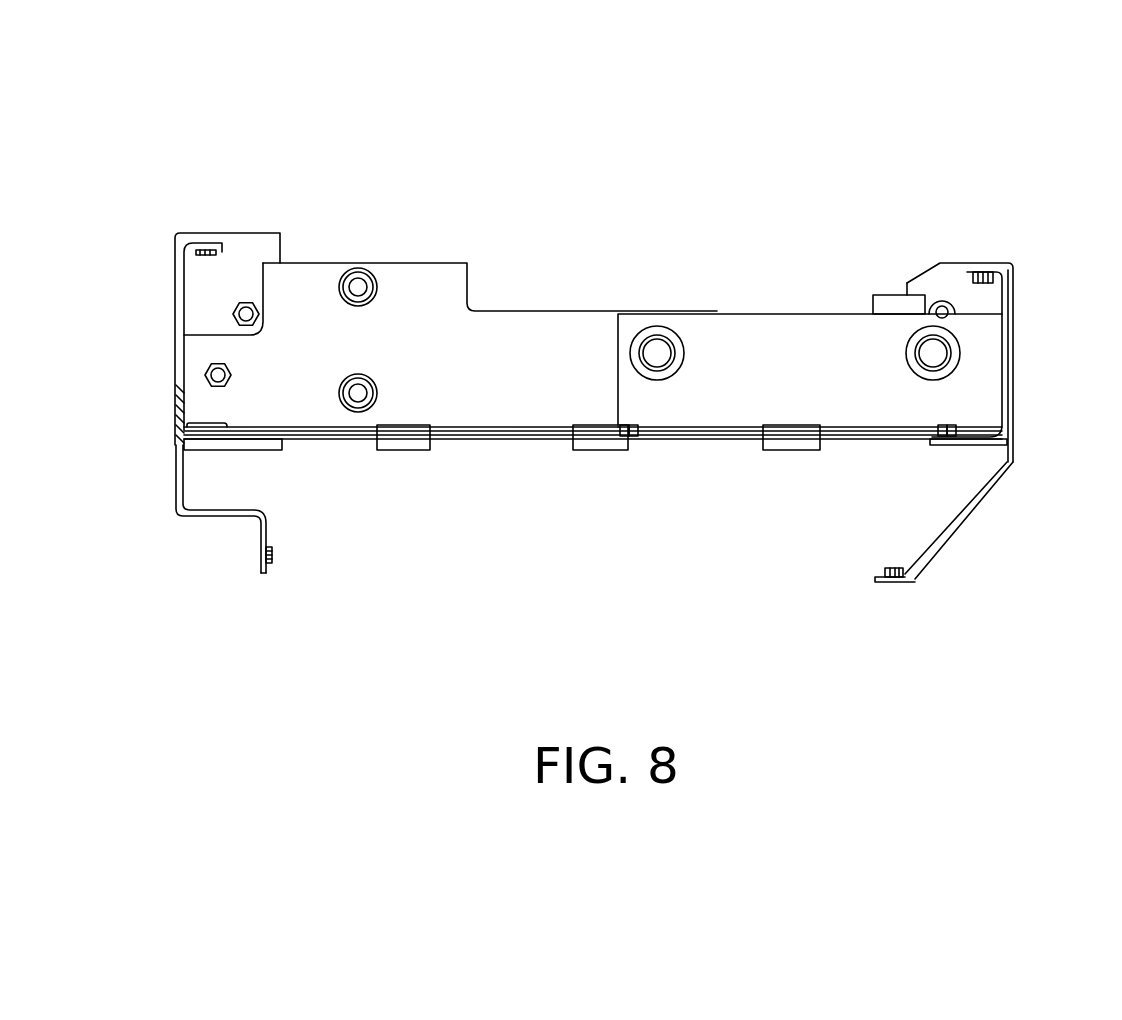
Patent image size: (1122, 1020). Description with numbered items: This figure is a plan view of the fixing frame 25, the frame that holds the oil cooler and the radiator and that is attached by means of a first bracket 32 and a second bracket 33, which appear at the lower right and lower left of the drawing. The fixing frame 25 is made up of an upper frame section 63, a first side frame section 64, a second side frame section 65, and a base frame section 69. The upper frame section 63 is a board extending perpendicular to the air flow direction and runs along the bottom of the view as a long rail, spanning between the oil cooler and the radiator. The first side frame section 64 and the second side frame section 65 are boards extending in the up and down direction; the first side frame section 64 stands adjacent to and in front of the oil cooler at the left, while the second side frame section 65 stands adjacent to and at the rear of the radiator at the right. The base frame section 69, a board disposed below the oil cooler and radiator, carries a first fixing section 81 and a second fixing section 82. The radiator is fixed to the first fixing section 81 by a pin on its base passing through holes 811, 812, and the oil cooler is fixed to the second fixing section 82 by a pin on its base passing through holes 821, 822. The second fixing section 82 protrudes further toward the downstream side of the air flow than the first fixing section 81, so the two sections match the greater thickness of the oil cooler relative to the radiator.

The fixing frame 25 is at (693, 212).
The first bracket 32 is at (957, 527).
The second bracket 33 is at (200, 518).
The upper frame section 63 is at (659, 431).
The first side frame section 64 is at (176, 292).
The second side frame section 65 is at (1009, 300).
The base frame section 69 is at (555, 287).
The first fixing section 81 is at (832, 327).
The hole 811 is at (923, 340).
The hole 812 is at (650, 340).
The second fixing section 82 is at (425, 268).
The hole 821 is at (347, 266).
The hole 822 is at (355, 410).